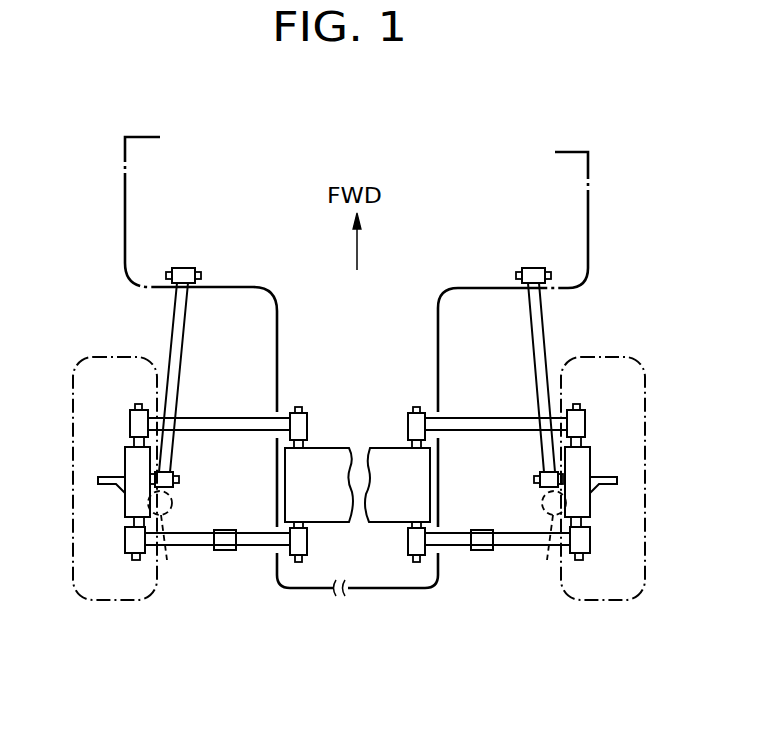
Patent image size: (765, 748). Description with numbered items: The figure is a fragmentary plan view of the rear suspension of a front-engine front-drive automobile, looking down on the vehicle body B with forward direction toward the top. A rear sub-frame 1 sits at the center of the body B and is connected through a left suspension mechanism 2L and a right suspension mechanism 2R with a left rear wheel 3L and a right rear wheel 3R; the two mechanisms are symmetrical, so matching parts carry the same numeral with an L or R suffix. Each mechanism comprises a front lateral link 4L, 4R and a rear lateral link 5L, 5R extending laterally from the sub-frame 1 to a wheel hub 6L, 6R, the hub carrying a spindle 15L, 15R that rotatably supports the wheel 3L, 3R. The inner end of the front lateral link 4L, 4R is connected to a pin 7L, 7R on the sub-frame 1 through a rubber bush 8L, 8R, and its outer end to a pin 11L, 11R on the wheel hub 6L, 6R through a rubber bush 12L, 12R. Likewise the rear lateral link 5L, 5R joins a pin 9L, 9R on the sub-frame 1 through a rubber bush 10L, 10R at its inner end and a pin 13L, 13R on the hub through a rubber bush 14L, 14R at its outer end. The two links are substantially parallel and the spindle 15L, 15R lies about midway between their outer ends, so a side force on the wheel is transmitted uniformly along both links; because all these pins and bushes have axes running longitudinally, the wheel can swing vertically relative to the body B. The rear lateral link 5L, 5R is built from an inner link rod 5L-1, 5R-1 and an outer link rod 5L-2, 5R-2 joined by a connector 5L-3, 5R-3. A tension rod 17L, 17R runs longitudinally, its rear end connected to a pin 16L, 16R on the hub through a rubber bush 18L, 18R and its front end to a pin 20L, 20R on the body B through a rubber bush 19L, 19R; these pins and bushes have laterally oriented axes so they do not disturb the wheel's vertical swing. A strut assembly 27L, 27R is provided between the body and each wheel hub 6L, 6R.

The rear sub-frame 1 is at (380, 455).
The suspension mechanism 2L is at (218, 606).
The suspension mechanism 2R is at (498, 612).
The rear wheel 3L is at (70, 528).
The rear wheel 3R is at (645, 528).
The front lateral link 4L is at (215, 418).
The front lateral link 4R is at (492, 418).
The rear lateral link 5L is at (224, 548).
The inner link rod 5L-1 is at (257, 550).
The outer link rod 5L-2 is at (193, 550).
The connector 5L-3 is at (226, 532).
The rear lateral link 5R is at (489, 552).
The inner link rod 5R-1 is at (449, 550).
The outer link rod 5R-2 is at (500, 550).
The connector 5R-3 is at (478, 532).
The wheel hub 6L is at (125, 460).
The wheel hub 6R is at (582, 462).
The pin 7L is at (297, 406).
The pin 7R is at (416, 406).
The rubber bush 8L is at (302, 428).
The rubber bush 8R is at (410, 425).
The pin 9L is at (298, 563).
The pin 9R is at (418, 563).
The rubber bush 10L is at (300, 543).
The rubber bush 10R is at (414, 545).
The pin 11L is at (137, 405).
The pin 11R is at (576, 405).
The rubber bush 12L is at (130, 420).
The rubber bush 12R is at (585, 424).
The pin 13L is at (135, 562).
The pin 13R is at (578, 562).
The rubber bush 14L is at (128, 550).
The rubber bush 14R is at (580, 547).
The spindle 15L is at (100, 487).
The spindle 15R is at (617, 480).
The pin 16L is at (178, 480).
The pin 16R is at (534, 480).
The tension rod 17L is at (187, 325).
The tension rod 17R is at (530, 315).
The rubber bush 18L is at (167, 488).
The rubber bush 18R is at (545, 490).
The rubber bush 19L is at (188, 272).
The rubber bush 19R is at (534, 270).
The pin 20L is at (168, 272).
The pin 20R is at (552, 277).
The strut assembly 27L is at (150, 552).
The strut assembly 27R is at (507, 548).
The vehicle body B is at (587, 190).